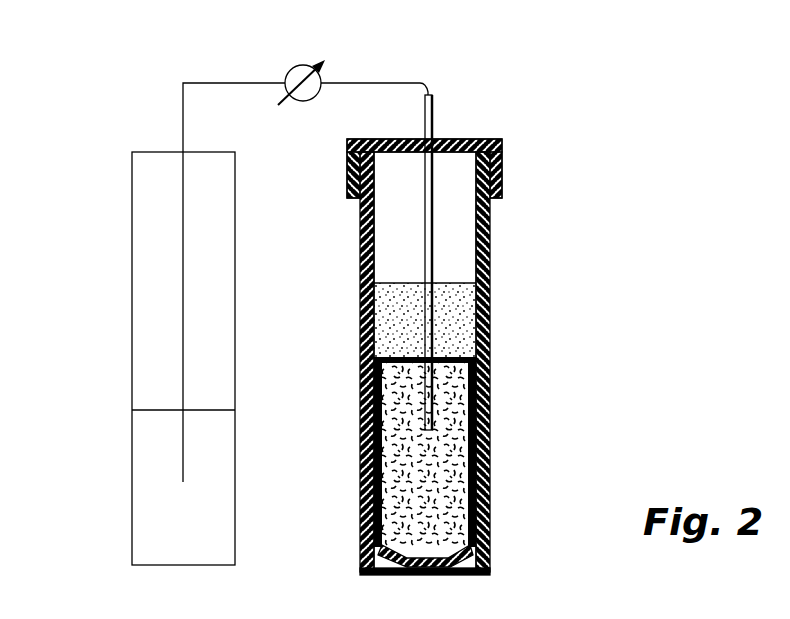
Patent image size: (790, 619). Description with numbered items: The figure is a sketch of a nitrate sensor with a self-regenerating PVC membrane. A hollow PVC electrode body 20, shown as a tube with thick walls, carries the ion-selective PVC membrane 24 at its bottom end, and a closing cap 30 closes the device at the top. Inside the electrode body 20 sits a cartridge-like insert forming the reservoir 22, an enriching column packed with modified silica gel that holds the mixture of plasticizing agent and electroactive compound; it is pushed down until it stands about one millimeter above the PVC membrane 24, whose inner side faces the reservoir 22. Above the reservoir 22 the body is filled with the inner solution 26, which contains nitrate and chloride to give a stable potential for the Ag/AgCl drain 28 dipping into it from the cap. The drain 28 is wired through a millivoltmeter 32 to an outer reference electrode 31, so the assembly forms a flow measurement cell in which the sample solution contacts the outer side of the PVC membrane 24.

The PVC electrode body 20 is at (490, 231).
The reservoir 22 is at (448, 457).
The PVC membrane 24 is at (462, 575).
The inner solution 26 is at (458, 335).
The Ag/AgCl drain 28 is at (432, 262).
The closing cap 30 is at (502, 166).
The outer reference electrode 31 is at (132, 488).
The millivoltmeter 32 is at (296, 66).